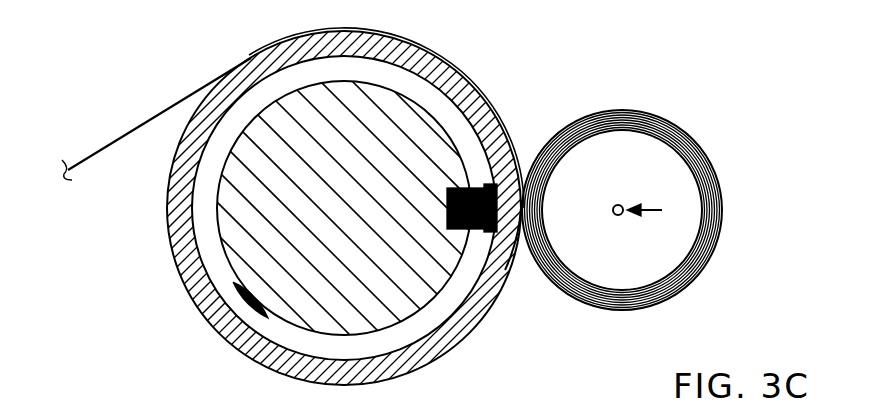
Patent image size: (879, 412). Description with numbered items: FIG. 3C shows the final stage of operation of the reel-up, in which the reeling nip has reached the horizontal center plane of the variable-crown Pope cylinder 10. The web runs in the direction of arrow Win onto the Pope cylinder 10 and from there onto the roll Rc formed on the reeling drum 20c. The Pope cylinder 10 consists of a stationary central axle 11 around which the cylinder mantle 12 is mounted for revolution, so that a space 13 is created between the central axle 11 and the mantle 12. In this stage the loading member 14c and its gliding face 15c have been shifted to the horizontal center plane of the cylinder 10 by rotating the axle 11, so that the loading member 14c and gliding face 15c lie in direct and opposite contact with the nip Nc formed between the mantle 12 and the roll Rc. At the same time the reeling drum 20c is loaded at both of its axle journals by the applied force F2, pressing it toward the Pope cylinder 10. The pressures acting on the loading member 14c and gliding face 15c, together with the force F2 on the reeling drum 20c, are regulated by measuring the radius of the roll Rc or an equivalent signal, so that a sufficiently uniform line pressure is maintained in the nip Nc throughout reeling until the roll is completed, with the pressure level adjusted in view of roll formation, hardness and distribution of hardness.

The Pope cylinder 10 is at (439, 208).
The central axle 11 is at (230, 260).
The cylinder mantle 12 is at (208, 302).
The space 13 is at (245, 318).
The loading member 14c is at (467, 187).
The gliding face 15c is at (492, 255).
The reeling drum 20c is at (637, 147).
The roll Rc is at (585, 118).
The reeling nip Nc is at (531, 207).
The applied force F2 is at (650, 203).
The web run direction Win is at (150, 107).